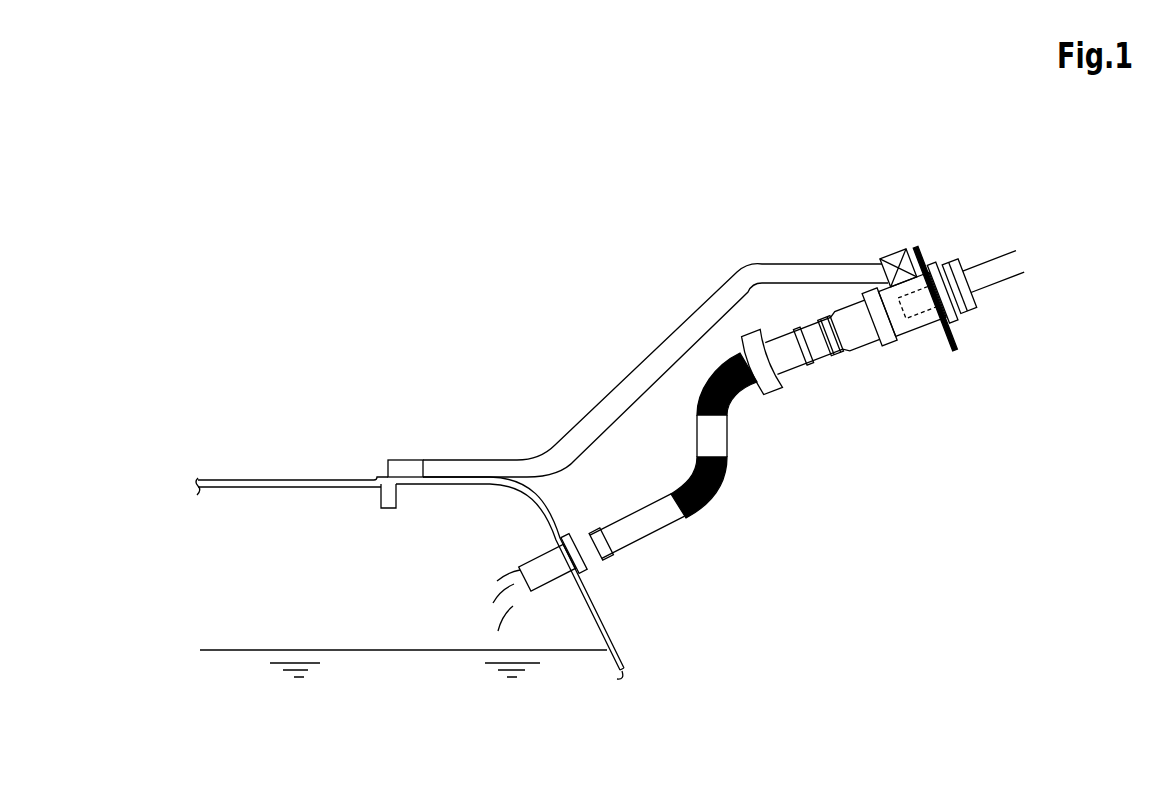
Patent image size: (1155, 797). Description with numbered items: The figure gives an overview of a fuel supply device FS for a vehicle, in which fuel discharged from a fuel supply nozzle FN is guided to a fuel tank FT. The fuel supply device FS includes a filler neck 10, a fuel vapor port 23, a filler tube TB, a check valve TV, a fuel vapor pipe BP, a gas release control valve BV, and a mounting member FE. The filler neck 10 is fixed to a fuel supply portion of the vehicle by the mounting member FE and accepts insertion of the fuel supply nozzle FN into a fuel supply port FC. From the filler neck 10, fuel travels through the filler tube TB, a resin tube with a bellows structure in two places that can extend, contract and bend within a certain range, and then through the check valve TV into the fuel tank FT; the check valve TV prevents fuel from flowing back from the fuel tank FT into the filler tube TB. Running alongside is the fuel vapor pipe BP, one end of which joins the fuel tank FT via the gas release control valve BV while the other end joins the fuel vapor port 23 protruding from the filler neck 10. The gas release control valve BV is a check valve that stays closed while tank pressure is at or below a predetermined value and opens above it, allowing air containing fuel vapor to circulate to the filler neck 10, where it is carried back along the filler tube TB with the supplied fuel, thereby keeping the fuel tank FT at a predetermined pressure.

The fuel supply device FS is at (702, 340).
The fuel tank FT is at (245, 478).
The gas release control valve BV is at (397, 460).
The fuel vapor pipe BP is at (612, 390).
The filler tube TB is at (727, 438).
The check valve TV is at (524, 580).
The filler neck 10 is at (881, 281).
The fuel vapor port 23 is at (920, 250).
The mounting member FE is at (893, 250).
The fuel supply nozzle FN is at (979, 263).
The fuel supply port FC is at (970, 300).